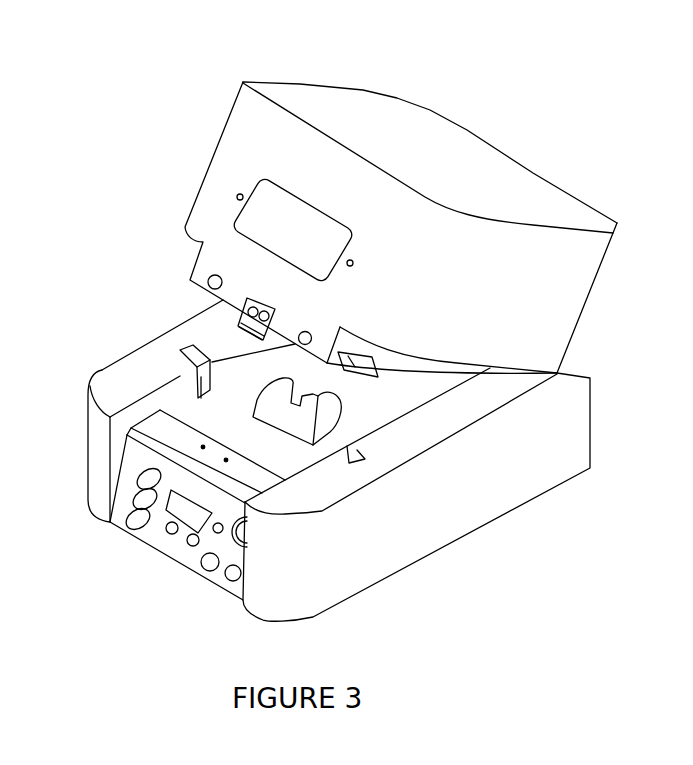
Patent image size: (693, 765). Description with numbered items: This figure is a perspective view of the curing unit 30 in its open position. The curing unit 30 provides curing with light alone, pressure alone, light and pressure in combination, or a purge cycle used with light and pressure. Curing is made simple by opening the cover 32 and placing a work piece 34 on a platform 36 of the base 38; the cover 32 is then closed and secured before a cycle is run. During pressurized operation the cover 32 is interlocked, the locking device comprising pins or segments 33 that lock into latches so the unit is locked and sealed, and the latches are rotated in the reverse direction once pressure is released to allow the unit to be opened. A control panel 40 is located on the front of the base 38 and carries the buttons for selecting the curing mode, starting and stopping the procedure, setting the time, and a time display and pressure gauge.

The curing unit 30 is at (548, 94).
The cover 32 is at (512, 178).
The pins or segments 33 is at (378, 377).
The work piece 34 is at (332, 413).
The platform 36 is at (227, 400).
The base 38 is at (552, 437).
The control panel 40 is at (175, 553).